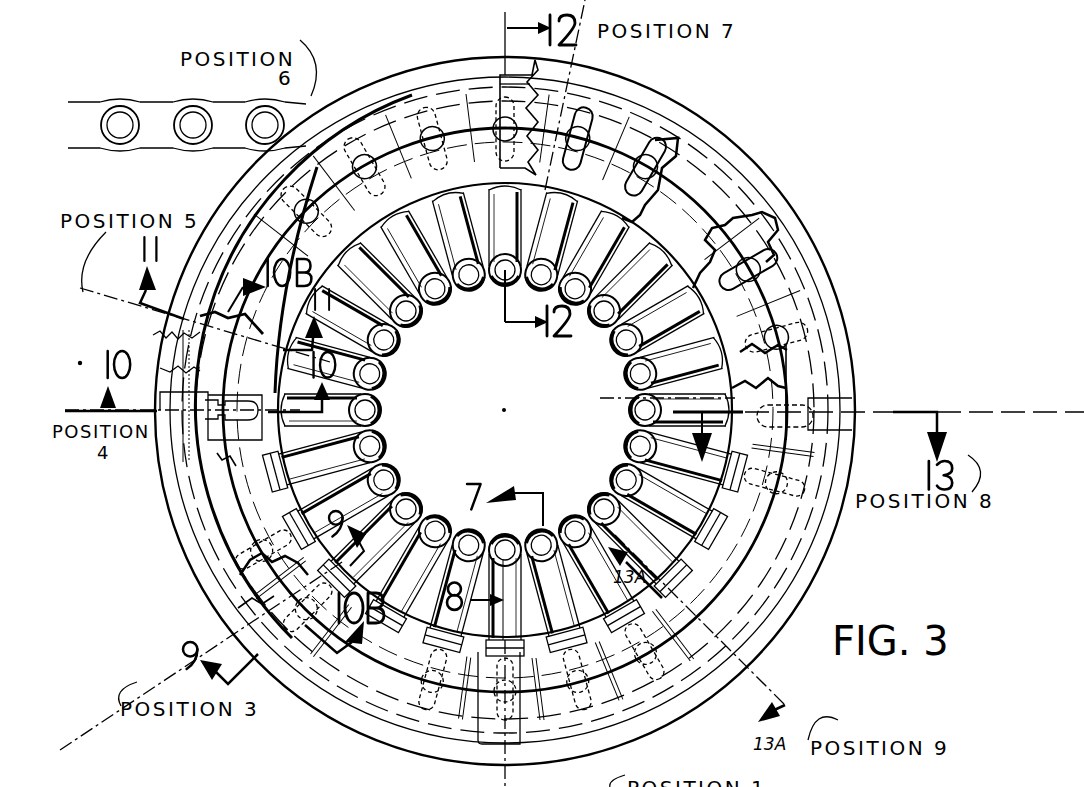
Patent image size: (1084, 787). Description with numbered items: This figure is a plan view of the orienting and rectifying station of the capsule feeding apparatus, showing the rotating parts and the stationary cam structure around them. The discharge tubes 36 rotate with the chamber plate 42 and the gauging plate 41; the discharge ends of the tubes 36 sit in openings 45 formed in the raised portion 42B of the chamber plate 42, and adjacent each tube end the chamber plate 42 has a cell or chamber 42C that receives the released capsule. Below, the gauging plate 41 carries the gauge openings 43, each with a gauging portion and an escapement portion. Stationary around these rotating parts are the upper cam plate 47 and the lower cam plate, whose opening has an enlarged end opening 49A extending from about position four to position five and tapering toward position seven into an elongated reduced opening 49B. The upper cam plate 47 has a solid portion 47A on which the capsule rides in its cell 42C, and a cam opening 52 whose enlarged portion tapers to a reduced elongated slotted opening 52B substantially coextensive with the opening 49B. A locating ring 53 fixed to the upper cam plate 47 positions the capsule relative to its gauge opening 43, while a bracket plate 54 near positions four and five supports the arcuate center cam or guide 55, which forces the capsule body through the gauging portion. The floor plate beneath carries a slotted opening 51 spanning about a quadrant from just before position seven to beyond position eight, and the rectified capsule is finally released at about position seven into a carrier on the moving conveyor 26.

The moving conveyor 26 is at (185, 152).
The discharge tube 36 is at (610, 338).
The gauging plate 41 is at (782, 266).
The chamber plate 42 is at (361, 775).
The raised portion 42B is at (323, 781).
The cell or chamber 42C is at (540, 776).
The gauge opening 43 is at (756, 246).
The opening 45 is at (868, 777).
The upper cam plate 47 is at (407, 74).
The solid portion 47A is at (838, 398).
The enlarged end opening 49A is at (195, 442).
The elongated reduced opening 49B is at (690, 186).
The slotted opening 51 is at (834, 282).
The cam opening 52 is at (318, 655).
The reduced elongated slotted opening 52B is at (793, 368).
The locating ring 53 is at (824, 532).
The bracket plate 54 is at (196, 394).
The center cam or guide 55 is at (230, 398).